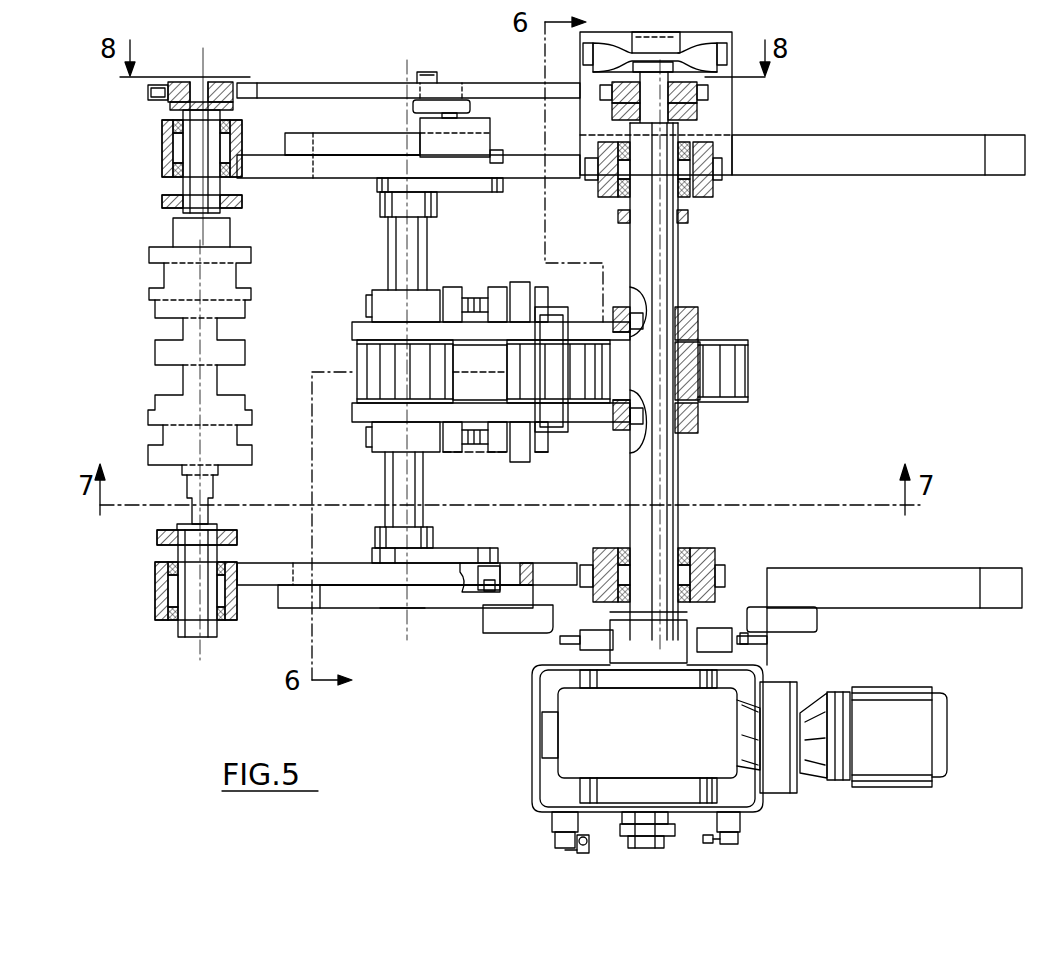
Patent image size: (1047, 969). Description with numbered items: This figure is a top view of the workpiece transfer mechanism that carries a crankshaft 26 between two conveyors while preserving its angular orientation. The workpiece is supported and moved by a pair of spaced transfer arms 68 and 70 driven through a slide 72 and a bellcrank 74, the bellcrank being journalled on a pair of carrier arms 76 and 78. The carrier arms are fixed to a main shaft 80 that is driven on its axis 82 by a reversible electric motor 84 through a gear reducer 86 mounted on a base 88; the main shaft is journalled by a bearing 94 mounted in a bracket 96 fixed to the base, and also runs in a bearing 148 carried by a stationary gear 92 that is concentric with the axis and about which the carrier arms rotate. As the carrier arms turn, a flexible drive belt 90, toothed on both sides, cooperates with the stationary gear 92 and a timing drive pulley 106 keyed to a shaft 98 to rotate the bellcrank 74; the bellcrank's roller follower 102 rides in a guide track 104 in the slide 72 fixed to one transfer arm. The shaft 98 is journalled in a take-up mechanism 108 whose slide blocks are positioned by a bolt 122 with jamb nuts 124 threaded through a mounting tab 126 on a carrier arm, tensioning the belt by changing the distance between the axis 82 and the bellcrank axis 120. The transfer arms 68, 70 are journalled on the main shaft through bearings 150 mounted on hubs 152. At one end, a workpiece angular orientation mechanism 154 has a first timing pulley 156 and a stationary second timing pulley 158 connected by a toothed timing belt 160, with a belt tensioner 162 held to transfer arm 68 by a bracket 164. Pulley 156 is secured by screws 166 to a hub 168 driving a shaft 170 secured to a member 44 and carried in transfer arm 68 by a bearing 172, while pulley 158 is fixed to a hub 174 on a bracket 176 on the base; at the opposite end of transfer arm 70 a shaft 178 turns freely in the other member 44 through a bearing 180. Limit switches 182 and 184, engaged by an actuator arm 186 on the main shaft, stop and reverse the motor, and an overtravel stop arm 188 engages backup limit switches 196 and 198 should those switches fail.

The crankshaft 26 is at (150, 262).
The member 44 is at (162, 200).
The transfer arm 68 is at (282, 177).
The transfer arm 70 is at (273, 568).
The slide 72 is at (345, 140).
The bellcrank 74 is at (498, 190).
The carrier arm 76 is at (360, 320).
The carrier arm 78 is at (363, 414).
The main shaft 80 is at (672, 454).
The axis 82 is at (650, 505).
The reversible electric motor 84 is at (946, 699).
The gear reducer 86 is at (670, 737).
The base 88 is at (896, 573).
The flexible drive belt 90 is at (491, 368).
The stationary gear 92 is at (750, 348).
The bearing 94 is at (673, 32).
The bracket 96 is at (603, 55).
The shaft 98 is at (390, 473).
The roller follower 102 is at (501, 563).
The guide track 104 is at (387, 150).
The timing drive pulley 106 is at (356, 350).
The take-up mechanism 108 is at (449, 268).
The axis 120 is at (402, 614).
The bolt 122 is at (473, 437).
The jamb nuts 124 is at (462, 452).
The mounting tab 126 is at (532, 450).
The bearing 148 is at (688, 395).
The bearing 150 is at (697, 195).
The hub 152 is at (690, 220).
The workpiece angular orientation mechanism 154 is at (243, 63).
The first timing pulley 156 is at (170, 98).
The second timing pulley 158 is at (708, 93).
The toothed timing belt 160 is at (352, 84).
The belt tensioner 162 is at (467, 105).
The bracket 164 is at (483, 142).
The screws 166 is at (166, 84).
The hub 168 is at (238, 106).
The shaft 170 is at (190, 152).
The bearing 172 is at (172, 121).
The hub 174 is at (697, 105).
The bracket 176 is at (697, 116).
The shaft 178 is at (189, 628).
The bearing 180 is at (157, 603).
The limit switch 182 is at (565, 852).
The limit switch 184 is at (728, 848).
The actuator arm 186 is at (603, 835).
The overtravel stop arm 188 is at (586, 633).
The limit switch 196 is at (528, 635).
The limit switch 198 is at (766, 638).